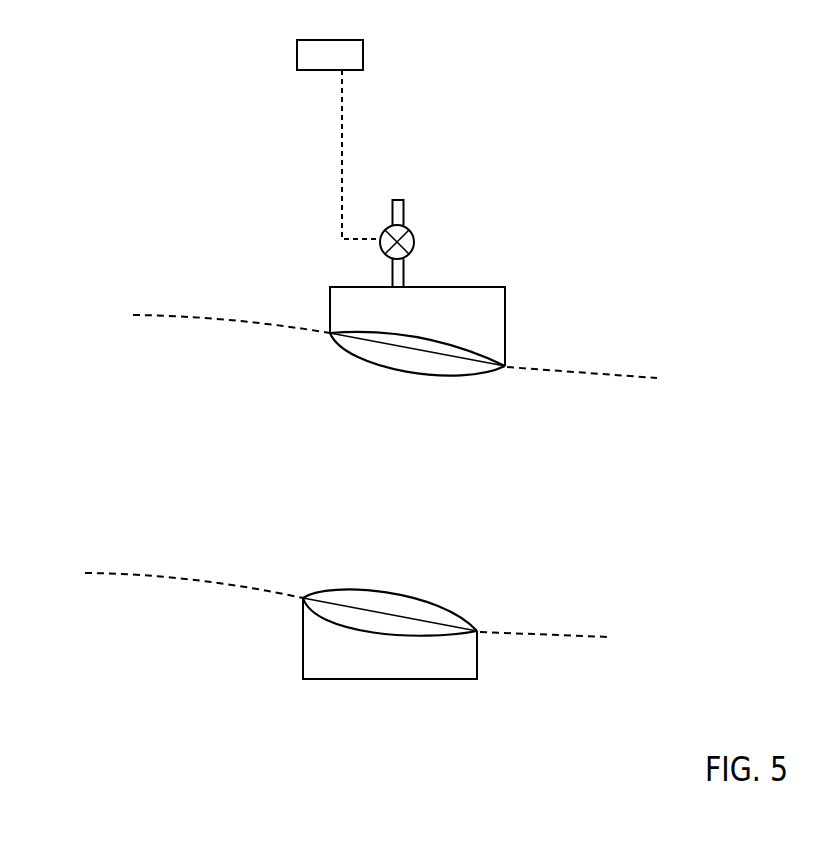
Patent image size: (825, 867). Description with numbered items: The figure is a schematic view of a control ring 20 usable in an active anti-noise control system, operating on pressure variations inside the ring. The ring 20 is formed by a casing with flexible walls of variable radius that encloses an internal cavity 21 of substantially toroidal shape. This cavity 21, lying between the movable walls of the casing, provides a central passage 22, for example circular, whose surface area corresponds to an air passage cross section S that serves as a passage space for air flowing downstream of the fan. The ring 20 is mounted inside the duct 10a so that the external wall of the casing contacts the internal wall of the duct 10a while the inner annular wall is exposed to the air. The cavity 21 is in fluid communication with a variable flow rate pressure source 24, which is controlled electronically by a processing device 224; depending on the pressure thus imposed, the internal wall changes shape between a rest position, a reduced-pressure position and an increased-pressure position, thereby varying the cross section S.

The processing device 224 is at (338, 139).
The variable flow rate pressure source 24 is at (387, 223).
The control ring 20 is at (337, 250).
The internal cavity 21 is at (462, 292).
The duct 10a is at (182, 355).
The central passage 22 is at (353, 452).
The air passage cross section S is at (437, 358).